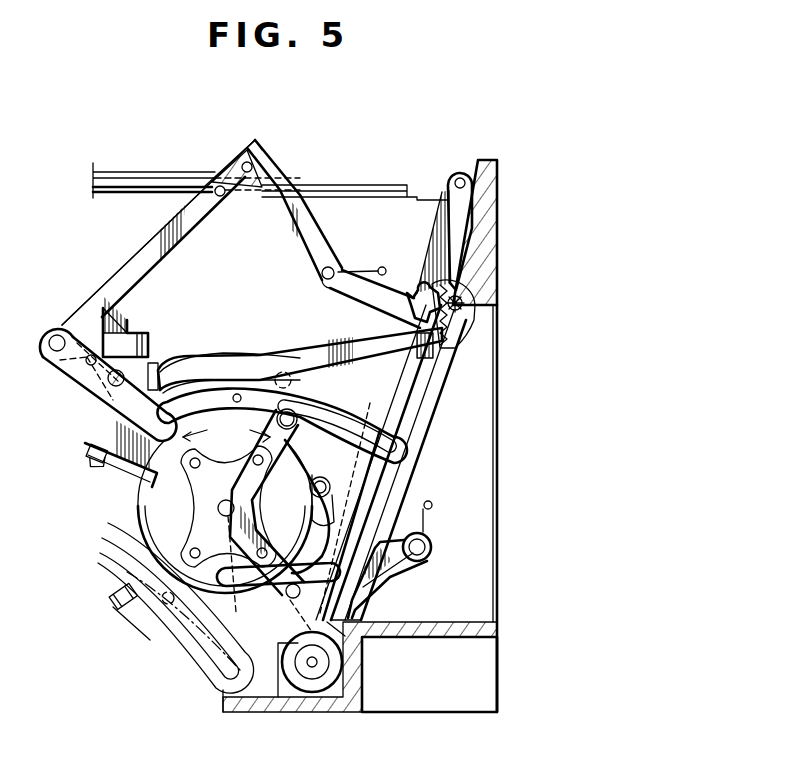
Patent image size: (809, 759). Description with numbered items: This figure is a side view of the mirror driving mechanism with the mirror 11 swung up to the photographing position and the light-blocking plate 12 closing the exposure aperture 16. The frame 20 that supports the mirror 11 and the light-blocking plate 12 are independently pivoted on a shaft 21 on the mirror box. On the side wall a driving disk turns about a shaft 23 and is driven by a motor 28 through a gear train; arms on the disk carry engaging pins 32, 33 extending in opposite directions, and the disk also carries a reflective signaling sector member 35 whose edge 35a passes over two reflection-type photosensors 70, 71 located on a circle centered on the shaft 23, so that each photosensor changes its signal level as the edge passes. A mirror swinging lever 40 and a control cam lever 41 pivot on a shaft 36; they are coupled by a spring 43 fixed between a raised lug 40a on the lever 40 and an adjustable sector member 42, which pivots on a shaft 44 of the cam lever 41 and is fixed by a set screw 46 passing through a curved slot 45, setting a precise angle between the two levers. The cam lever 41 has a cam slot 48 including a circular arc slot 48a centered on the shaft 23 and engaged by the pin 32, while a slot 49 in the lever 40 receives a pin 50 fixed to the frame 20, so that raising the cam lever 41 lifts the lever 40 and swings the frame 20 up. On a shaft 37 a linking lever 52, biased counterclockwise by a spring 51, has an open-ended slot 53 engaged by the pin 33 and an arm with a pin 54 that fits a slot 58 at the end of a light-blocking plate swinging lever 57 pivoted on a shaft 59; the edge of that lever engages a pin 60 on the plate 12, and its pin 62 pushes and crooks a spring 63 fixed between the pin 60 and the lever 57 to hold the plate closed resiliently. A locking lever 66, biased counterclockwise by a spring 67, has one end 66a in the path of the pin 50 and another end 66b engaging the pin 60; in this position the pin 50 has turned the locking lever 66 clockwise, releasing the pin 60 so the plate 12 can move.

The mirror 11 is at (134, 172).
The light-blocking plate 12 is at (406, 410).
The exposure aperture 16 is at (430, 392).
The frame 20 is at (136, 194).
The shaft 21 is at (460, 172).
The shaft 23 is at (217, 510).
The motor 28 is at (345, 665).
The engaging pin 32 is at (322, 408).
The engaging pin 33 is at (283, 596).
The sector member 35 is at (153, 643).
The edge 35a is at (115, 466).
The shaft 36 is at (52, 358).
The shaft 37 is at (431, 550).
The mirror swinging lever 40 is at (195, 236).
The raised lug 40a is at (150, 328).
The control cam lever 41 is at (218, 370).
The adjustable sector member 42 is at (152, 362).
The spring 43 is at (100, 285).
The shaft 44 is at (88, 366).
The curved slot 45 is at (128, 338).
The set screw 46 is at (122, 385).
The cam slot 48 is at (238, 393).
The circular arc slot 48a is at (226, 434).
The slot 49 is at (226, 198).
The pin 50 is at (250, 158).
The spring 51 is at (430, 521).
The linking lever 52 is at (404, 578).
The open-ended slot 53 is at (280, 560).
The pin 54 is at (397, 482).
The light-blocking plate swinging lever 57 is at (336, 340).
The slot 58 is at (390, 513).
The shaft 59 is at (283, 372).
The pin 60 is at (410, 302).
The pin 62 is at (474, 316).
The spring 63 is at (465, 340).
The locking lever 66 is at (300, 252).
The one end of locking lever 66a is at (280, 160).
The other end of locking lever 66b is at (398, 296).
The spring 67 is at (368, 268).
The photosensor 70 is at (86, 455).
The photosensor 71 is at (116, 604).